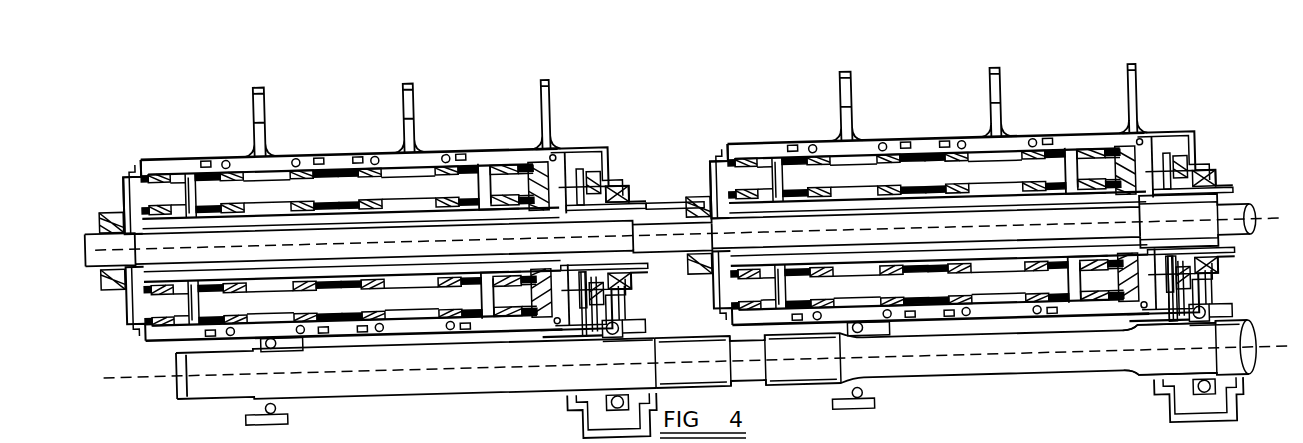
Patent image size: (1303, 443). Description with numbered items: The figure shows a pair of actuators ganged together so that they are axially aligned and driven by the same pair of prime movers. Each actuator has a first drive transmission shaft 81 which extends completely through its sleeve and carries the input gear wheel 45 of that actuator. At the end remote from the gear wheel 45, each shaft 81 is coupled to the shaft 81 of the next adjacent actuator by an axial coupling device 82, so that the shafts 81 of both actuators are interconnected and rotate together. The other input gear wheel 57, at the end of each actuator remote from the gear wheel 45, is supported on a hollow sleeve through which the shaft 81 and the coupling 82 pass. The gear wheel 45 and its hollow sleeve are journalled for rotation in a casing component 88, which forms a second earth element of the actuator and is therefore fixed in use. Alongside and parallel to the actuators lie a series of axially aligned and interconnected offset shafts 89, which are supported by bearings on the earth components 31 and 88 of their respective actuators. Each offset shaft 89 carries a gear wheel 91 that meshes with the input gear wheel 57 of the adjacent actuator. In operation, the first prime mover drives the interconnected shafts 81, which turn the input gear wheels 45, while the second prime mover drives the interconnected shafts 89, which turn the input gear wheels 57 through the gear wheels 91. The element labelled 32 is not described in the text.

The earth component 31 is at (268, 128).
The shift rod 32 is at (417, 124).
The input gear wheel 45 is at (143, 162).
The input gear wheel 57 is at (592, 196).
The first drive transmission shaft 81 is at (118, 206).
The axial coupling device 82 is at (663, 226).
The casing component 88 is at (557, 142).
The offset shaft 89 is at (480, 376).
The gear wheel 91 is at (1135, 362).